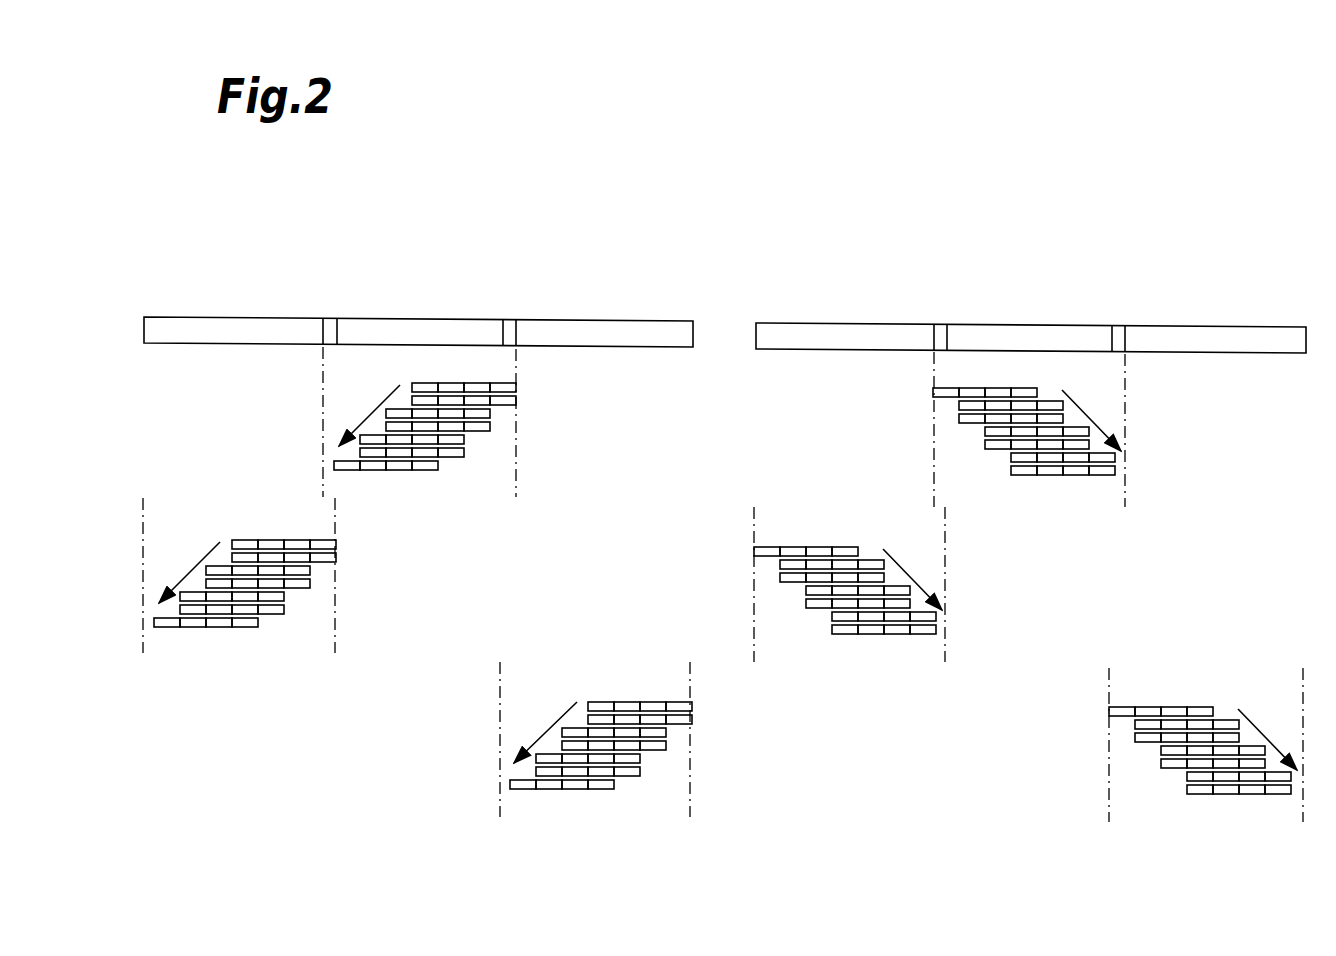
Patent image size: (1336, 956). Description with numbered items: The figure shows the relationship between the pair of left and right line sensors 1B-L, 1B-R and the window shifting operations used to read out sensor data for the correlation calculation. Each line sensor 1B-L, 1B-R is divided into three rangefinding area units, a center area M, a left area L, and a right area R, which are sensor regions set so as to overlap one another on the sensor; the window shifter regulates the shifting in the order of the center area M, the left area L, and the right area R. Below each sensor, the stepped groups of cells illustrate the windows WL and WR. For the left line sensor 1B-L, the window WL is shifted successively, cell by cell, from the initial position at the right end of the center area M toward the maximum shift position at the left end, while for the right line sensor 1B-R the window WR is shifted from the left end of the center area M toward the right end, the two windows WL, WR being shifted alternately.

The left line sensor 1B-L is at (460, 318).
The right line sensor 1B-R is at (980, 321).
The left area L is at (243, 333).
The center area M is at (425, 335).
The right area R is at (647, 338).
The window WL is at (377, 470).
The window WR is at (1073, 478).